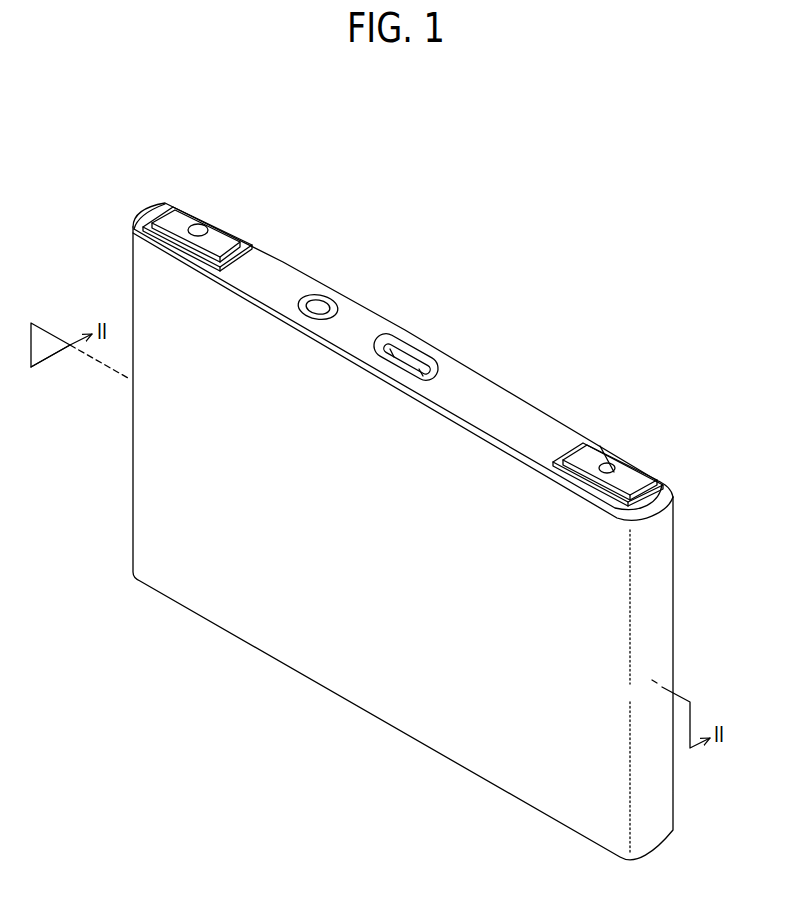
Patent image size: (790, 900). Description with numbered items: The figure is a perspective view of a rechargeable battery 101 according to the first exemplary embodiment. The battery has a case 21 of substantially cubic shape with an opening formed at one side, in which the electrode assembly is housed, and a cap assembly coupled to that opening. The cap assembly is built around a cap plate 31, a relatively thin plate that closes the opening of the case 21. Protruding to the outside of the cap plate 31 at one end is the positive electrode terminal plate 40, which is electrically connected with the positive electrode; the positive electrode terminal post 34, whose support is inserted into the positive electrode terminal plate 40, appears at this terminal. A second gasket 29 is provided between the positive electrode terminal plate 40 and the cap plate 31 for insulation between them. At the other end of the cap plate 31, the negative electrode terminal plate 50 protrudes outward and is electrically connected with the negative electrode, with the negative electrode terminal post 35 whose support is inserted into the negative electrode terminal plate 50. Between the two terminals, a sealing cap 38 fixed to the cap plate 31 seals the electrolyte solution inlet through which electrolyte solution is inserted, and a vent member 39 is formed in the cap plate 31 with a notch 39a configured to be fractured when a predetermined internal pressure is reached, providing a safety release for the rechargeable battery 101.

The rechargeable battery 101 is at (413, 500).
The case 21 is at (363, 677).
The second gasket 29 is at (252, 240).
The cap plate 31 is at (493, 393).
The positive electrode terminal post 34 is at (194, 224).
The negative electrode terminal post 35 is at (612, 463).
The sealing cap 38 is at (322, 300).
The vent member 39 is at (419, 336).
The notch 39a is at (394, 352).
The positive electrode terminal plate 40 is at (205, 212).
The negative electrode terminal plate 50 is at (601, 440).